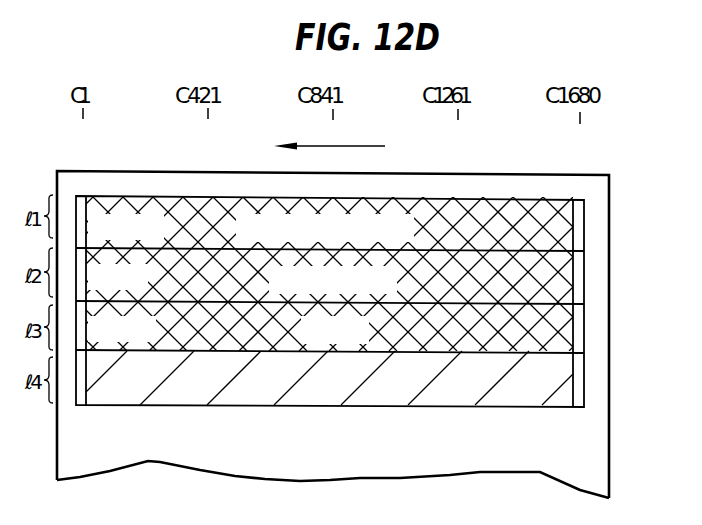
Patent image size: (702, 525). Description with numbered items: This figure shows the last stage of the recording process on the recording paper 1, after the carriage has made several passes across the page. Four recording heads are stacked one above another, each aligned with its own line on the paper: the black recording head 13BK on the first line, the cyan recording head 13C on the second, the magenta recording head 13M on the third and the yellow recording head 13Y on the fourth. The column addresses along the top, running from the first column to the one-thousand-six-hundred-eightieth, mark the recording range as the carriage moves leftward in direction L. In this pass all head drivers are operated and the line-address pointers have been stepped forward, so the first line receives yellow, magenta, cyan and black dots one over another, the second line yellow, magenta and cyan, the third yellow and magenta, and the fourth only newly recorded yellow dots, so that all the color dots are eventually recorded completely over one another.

The recording paper 1 is at (267, 470).
The recording head (black) 13BK is at (83, 224).
The recording head (cyan) 13C is at (83, 276).
The recording head (magenta) 13M is at (83, 330).
The recording head (yellow) 13Y is at (83, 385).